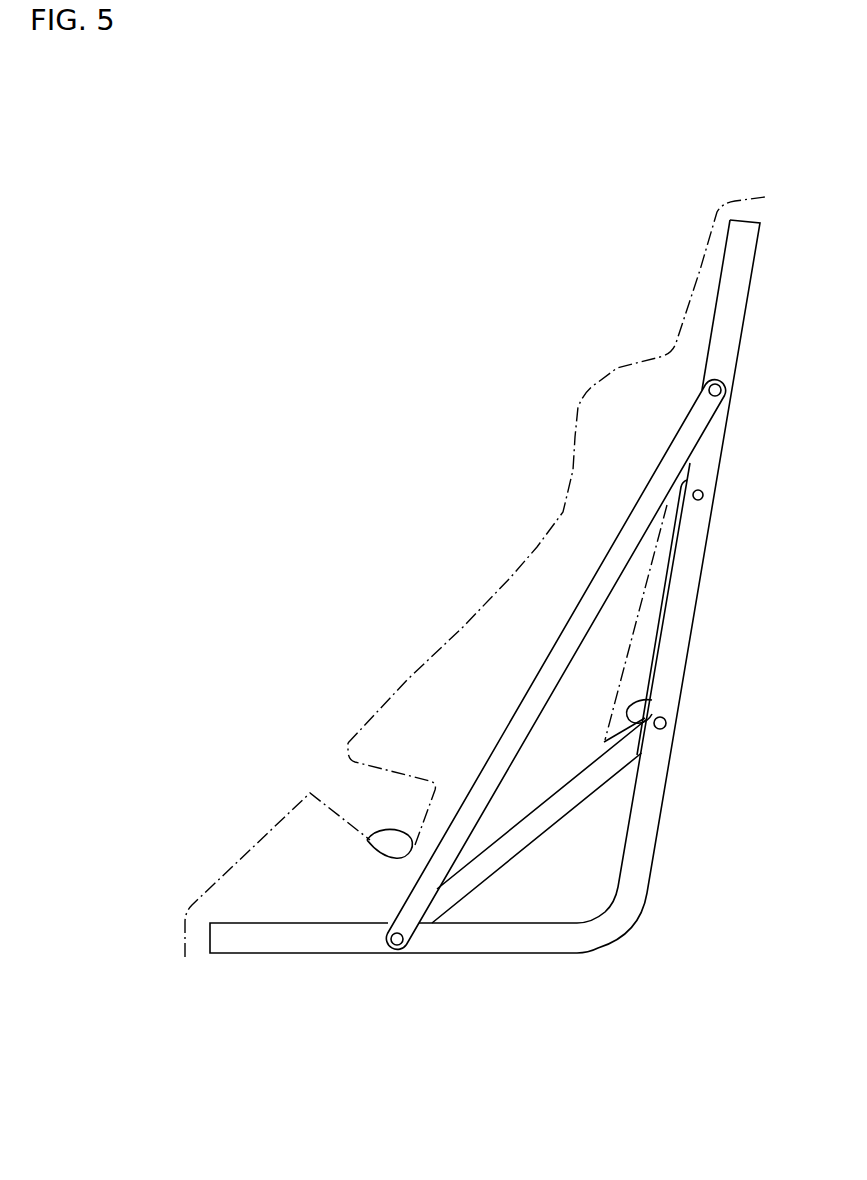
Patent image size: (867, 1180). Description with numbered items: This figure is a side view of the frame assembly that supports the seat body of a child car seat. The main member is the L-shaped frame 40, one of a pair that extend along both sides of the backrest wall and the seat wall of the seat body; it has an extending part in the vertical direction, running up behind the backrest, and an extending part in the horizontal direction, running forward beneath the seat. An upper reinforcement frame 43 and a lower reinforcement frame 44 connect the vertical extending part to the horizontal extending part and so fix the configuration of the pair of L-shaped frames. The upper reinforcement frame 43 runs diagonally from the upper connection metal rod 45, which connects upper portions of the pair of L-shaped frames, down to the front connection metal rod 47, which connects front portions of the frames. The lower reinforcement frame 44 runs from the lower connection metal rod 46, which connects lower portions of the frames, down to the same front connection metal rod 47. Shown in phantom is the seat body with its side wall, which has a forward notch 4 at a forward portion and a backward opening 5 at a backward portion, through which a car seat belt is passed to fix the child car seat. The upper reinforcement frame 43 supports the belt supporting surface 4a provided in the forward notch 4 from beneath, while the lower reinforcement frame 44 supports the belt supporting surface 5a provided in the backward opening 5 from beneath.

The forward notch 4 is at (336, 782).
The belt supporting surface 4a is at (368, 840).
The backward opening 5 is at (652, 606).
The belt supporting surface 5a is at (652, 697).
The L-shaped frame 40 is at (697, 568).
The upper reinforcement frame 43 is at (570, 630).
The lower reinforcement frame 44 is at (607, 770).
The upper connection metal rod 45 is at (722, 396).
The lower connection metal rod 46 is at (667, 723).
The front connection metal rod 47 is at (397, 950).